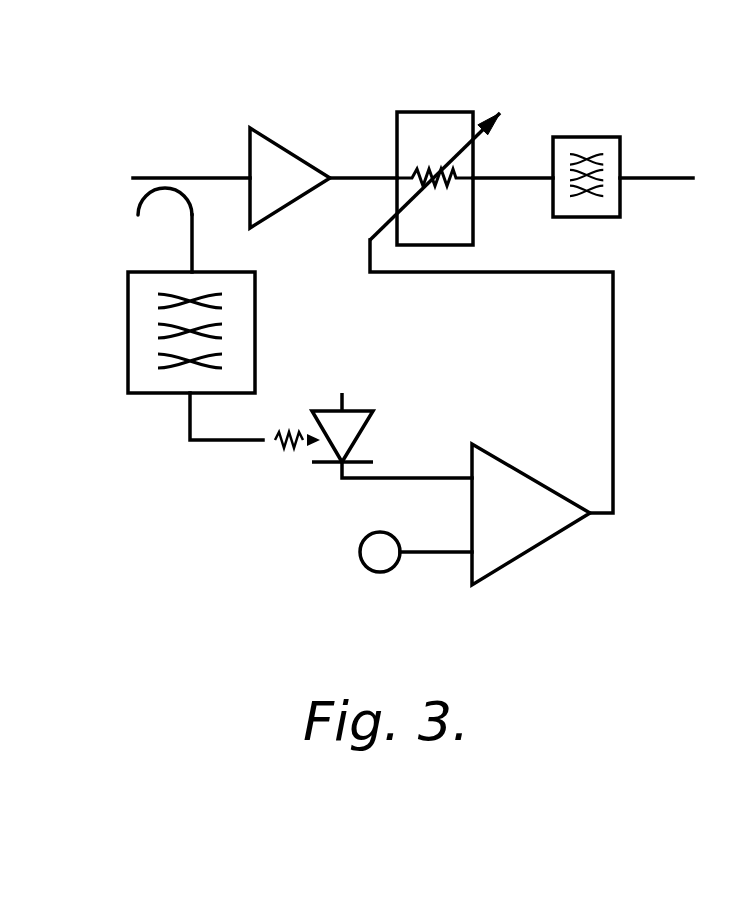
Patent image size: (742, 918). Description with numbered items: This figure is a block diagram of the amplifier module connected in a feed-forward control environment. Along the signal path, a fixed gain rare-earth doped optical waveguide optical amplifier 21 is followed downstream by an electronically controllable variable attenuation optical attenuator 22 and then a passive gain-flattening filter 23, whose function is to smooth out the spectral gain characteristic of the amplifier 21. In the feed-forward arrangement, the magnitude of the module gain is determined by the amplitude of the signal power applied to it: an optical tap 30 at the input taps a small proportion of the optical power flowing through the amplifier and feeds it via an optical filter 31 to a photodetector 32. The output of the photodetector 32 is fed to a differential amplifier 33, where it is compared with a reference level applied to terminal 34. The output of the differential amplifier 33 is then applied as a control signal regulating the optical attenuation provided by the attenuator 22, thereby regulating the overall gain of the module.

The optical tap 30 is at (160, 183).
The fixed gain rare-earth doped optical waveguide optical amplifier 21 is at (268, 165).
The electronically controllable variable attenuation optical attenuator 22 is at (428, 123).
The passive gain-flattening filter 23 is at (585, 143).
The optical filter 31 is at (237, 312).
The photodetector 32 is at (343, 425).
The differential amplifier 33 is at (513, 528).
The terminal 34 is at (370, 553).